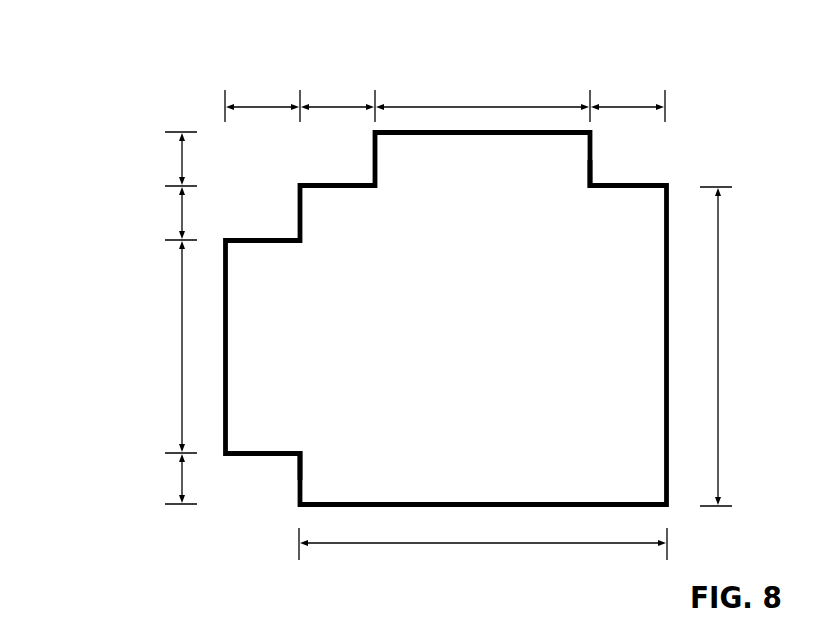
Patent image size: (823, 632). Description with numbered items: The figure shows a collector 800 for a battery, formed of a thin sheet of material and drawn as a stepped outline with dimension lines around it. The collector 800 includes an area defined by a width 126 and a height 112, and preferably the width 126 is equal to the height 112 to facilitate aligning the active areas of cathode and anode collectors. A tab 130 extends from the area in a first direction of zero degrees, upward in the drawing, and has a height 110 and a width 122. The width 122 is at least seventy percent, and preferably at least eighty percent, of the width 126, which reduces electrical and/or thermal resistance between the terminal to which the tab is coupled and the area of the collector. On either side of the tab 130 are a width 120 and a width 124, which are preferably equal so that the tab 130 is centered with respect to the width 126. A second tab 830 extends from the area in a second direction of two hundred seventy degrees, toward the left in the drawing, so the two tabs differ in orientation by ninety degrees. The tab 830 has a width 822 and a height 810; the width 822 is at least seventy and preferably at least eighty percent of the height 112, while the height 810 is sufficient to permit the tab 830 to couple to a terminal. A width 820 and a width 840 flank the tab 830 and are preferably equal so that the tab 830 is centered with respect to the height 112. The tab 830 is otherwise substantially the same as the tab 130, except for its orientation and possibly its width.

The collector 800 is at (111, 81).
The height 810 is at (258, 104).
The width 120 is at (335, 104).
The width 122 is at (482, 104).
The width 124 is at (629, 104).
The height 110 is at (180, 157).
The width 820 is at (180, 222).
The width 822 is at (180, 326).
The width 840 is at (180, 478).
The height 112 is at (720, 325).
The width 126 is at (487, 546).
The tab 130 is at (594, 146).
The tab 830 is at (268, 457).